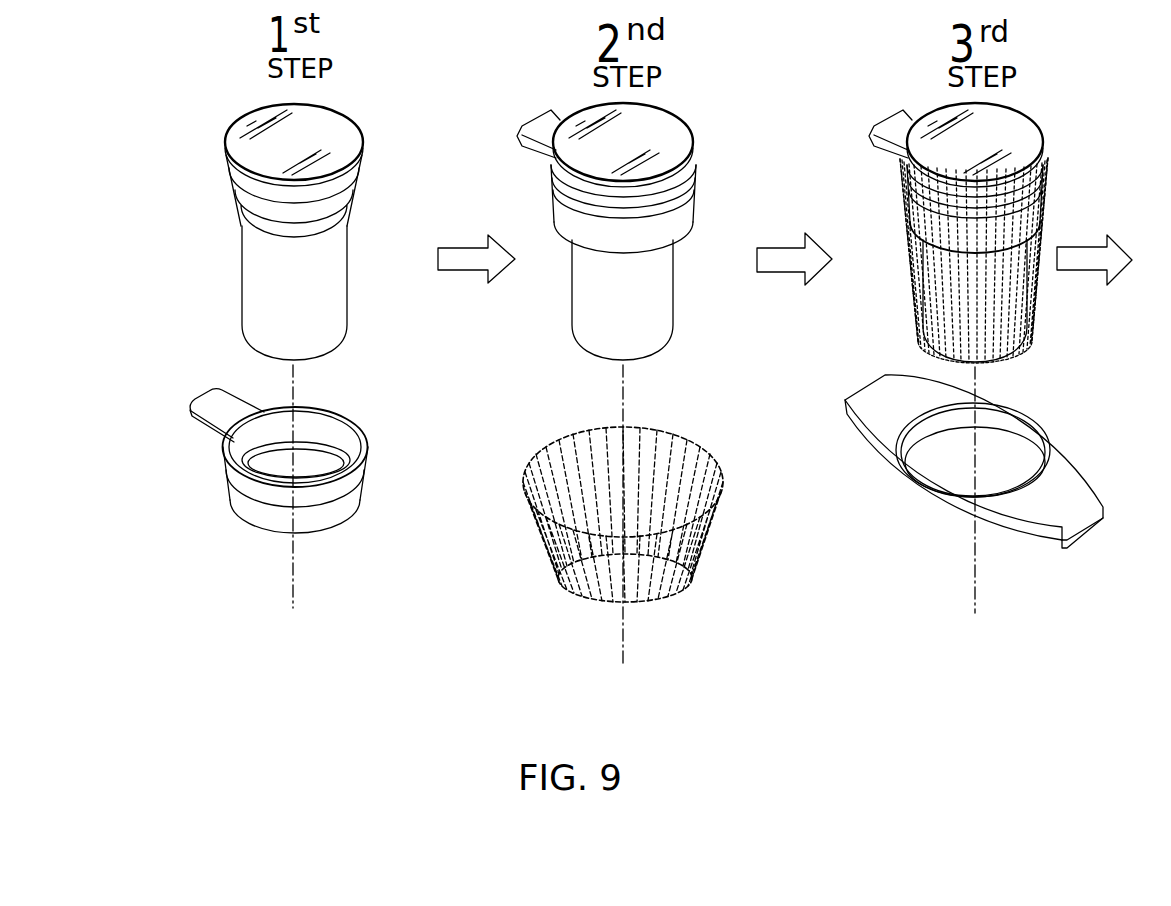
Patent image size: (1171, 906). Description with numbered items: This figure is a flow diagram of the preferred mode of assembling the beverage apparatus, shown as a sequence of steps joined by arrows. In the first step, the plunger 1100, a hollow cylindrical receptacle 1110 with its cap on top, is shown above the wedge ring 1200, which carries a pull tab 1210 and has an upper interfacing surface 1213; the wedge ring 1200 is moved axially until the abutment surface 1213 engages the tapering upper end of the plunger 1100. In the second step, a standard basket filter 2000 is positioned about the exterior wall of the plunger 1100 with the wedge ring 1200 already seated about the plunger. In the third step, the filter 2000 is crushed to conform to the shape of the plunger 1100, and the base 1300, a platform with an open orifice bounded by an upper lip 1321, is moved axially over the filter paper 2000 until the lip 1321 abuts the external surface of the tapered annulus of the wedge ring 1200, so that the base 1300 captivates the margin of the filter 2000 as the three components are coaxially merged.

The plunger 1100 is at (324, 289).
The receptacle 1110 is at (318, 223).
The wedge ring 1200 is at (322, 506).
The pull tab 1210 is at (1028, 213).
The upper interfacing surface 1213 is at (354, 439).
The base 1300 is at (924, 395).
The upper lip 1321 is at (1022, 418).
The filter 2000 is at (649, 557).